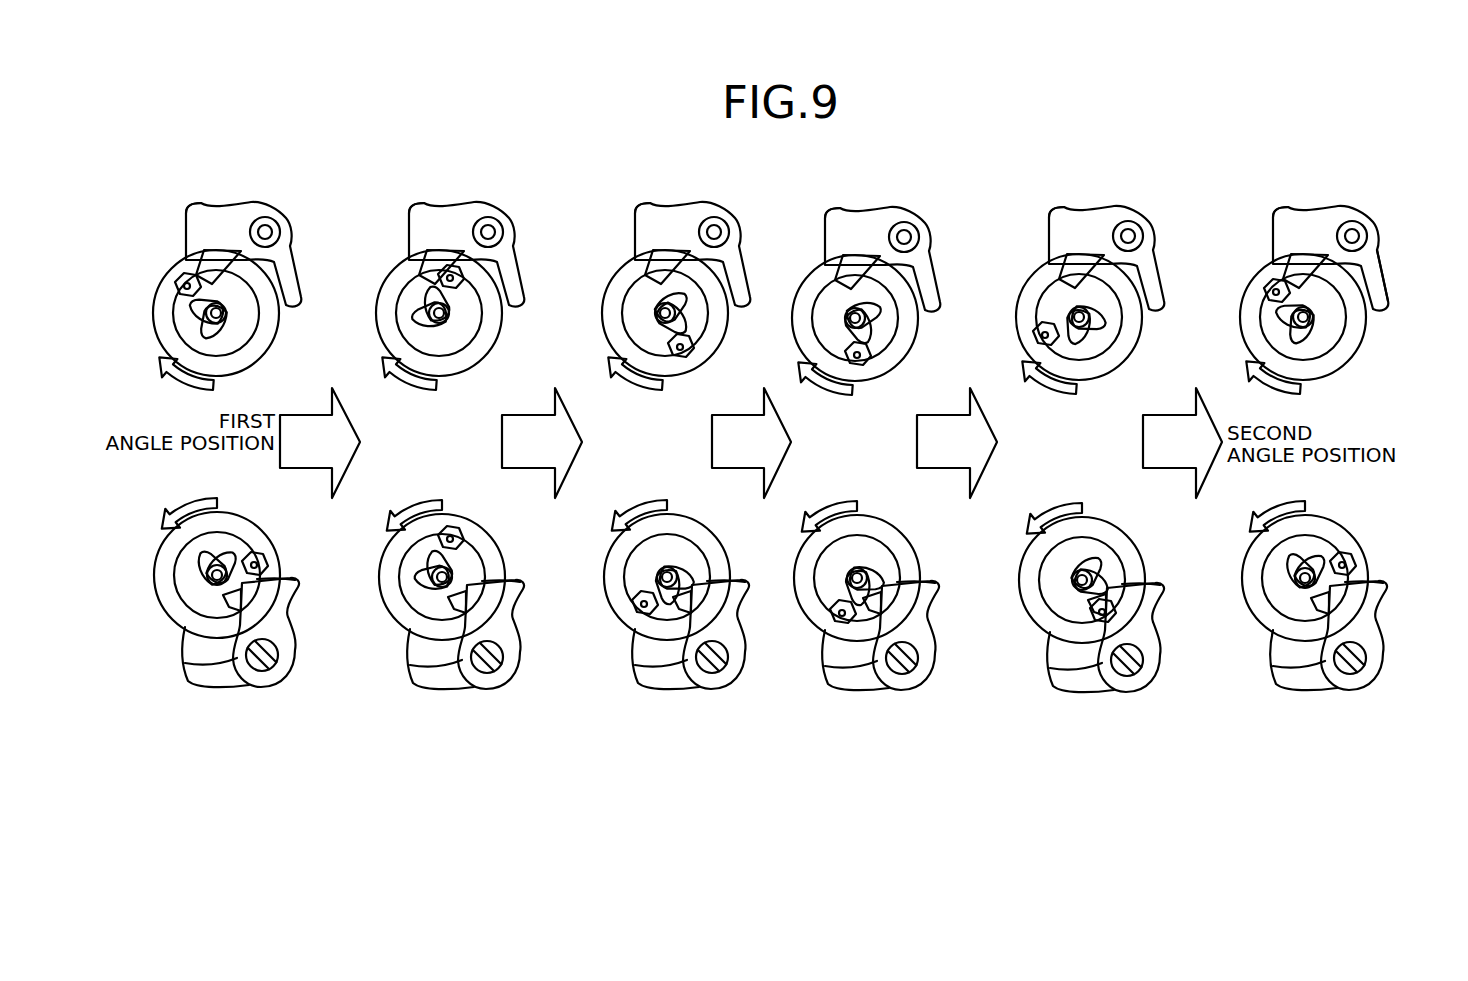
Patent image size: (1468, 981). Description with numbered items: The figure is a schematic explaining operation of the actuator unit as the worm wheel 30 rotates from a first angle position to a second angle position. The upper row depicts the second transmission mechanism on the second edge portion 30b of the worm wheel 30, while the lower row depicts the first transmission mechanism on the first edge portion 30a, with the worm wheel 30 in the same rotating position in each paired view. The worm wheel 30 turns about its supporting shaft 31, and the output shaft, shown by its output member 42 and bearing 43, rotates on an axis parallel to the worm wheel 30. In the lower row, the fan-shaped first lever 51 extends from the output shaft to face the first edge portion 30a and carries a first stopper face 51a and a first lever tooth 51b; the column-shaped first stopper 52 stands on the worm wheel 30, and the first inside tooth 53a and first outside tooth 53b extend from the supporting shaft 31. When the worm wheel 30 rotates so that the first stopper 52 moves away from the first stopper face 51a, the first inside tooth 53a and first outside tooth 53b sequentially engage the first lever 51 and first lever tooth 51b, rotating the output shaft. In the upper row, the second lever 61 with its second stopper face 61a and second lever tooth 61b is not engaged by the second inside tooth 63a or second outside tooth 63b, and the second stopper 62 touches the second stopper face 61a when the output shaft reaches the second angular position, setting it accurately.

The worm wheel 30 is at (160, 348).
The first edge portion 30a is at (245, 521).
The second edge portion 30b is at (272, 325).
The supporting shaft 31 is at (292, 266).
The output member 42 is at (266, 660).
The bearing 43 is at (267, 230).
The first lever 51 is at (1398, 302).
The first stopper face 51a is at (296, 581).
The first lever tooth 51b is at (226, 602).
The first stopper 52 is at (260, 560).
The first inside tooth 53a is at (200, 571).
The first outside tooth 53b is at (226, 546).
The second lever 61 is at (212, 214).
The second stopper face 61a is at (192, 207).
The second lever tooth 61b is at (196, 274).
The second stopper 62 is at (180, 285).
The second inside tooth 63a is at (232, 336).
The second outside tooth 63b is at (200, 303).